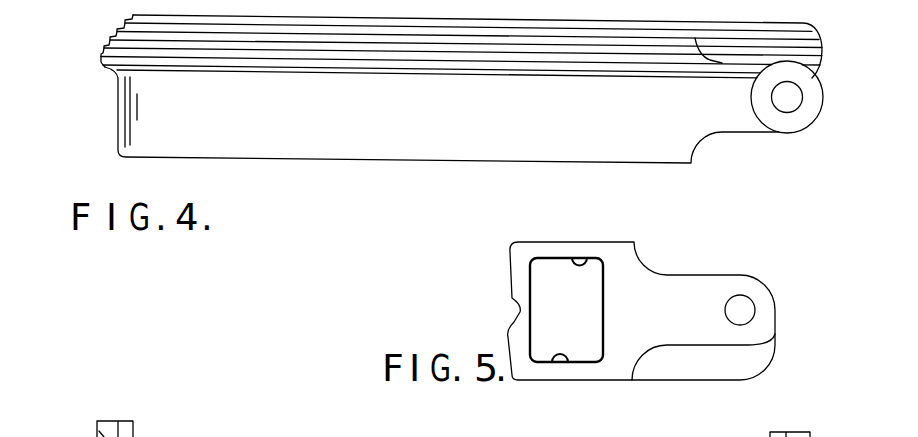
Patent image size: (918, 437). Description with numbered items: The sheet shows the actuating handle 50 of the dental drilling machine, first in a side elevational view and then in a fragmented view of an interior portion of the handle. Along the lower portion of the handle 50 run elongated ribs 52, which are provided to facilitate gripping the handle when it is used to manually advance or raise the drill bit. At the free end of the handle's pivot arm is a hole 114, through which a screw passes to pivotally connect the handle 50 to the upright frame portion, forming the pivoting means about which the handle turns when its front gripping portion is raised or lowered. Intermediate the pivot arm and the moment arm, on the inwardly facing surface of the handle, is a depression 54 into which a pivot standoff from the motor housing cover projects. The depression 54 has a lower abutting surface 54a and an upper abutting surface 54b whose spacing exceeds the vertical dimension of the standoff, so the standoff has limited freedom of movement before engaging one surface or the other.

In FIG. 4, the handle 50 is at (119, 117).
In FIG. 4, the elongated ribs 52 is at (133, 53).
In FIG. 5, the depression 54 is at (547, 313).
In FIG. 5, the lower abutting surface 54a is at (555, 353).
In FIG. 5, the upper abutting surface 54b is at (575, 263).
In FIG. 4, the hole 114 is at (784, 101).
In FIG. 5, the hole 114 is at (745, 309).